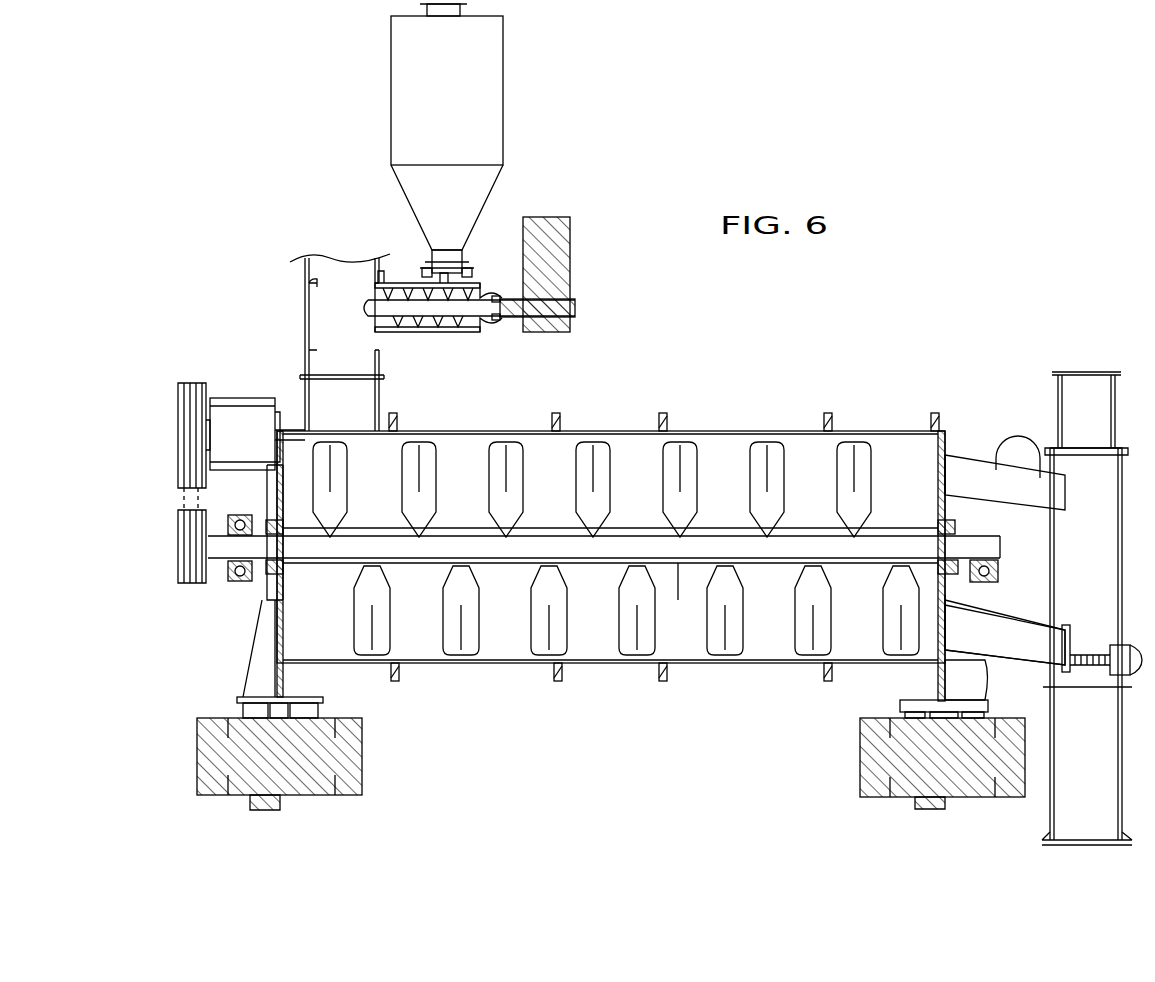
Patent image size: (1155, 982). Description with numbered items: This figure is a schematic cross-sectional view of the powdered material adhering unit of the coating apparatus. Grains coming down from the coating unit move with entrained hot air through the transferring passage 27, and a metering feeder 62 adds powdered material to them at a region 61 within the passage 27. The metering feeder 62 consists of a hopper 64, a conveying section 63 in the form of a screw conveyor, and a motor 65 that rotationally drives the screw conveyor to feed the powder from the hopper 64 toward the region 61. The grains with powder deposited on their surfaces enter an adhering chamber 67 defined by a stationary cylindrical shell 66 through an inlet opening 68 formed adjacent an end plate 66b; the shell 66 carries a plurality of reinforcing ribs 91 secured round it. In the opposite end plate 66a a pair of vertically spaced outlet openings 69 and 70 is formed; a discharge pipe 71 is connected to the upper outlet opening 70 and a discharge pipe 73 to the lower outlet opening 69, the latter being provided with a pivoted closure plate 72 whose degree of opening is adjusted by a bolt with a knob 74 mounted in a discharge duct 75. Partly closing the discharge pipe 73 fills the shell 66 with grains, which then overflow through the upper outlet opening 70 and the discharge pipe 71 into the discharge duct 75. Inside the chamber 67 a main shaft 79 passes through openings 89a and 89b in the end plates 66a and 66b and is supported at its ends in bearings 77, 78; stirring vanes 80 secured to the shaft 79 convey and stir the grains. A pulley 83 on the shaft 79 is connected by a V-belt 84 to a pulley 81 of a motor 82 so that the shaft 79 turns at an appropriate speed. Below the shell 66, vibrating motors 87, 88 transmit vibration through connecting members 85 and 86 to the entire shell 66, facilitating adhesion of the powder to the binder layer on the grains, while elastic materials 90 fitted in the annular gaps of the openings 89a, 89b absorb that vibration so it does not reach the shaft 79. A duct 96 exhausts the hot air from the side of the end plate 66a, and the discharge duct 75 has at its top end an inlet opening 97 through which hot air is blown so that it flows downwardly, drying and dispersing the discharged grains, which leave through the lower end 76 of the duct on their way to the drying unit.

The transferring passage 27 is at (305, 262).
The region 61 is at (332, 318).
The metering feeder 62 is at (544, 177).
The conveying section 63 is at (457, 346).
The hopper 64 is at (503, 95).
The motor 65 is at (570, 258).
The stationary cylindrical shell 66 is at (742, 431).
The end plate 66a is at (920, 490).
The end plate 66b is at (283, 622).
The adhering chamber 67 is at (509, 633).
The inlet opening 68 is at (345, 432).
The lower outlet opening 69 is at (930, 655).
The upper outlet opening 70 is at (938, 478).
The discharge pipe 71 is at (965, 455).
The pivoted closure plate 72 is at (1068, 650).
The discharge pipe 73 is at (990, 620).
The bolt with a knob 74 is at (1095, 668).
The discharge duct 75 is at (1050, 447).
The duct outlet 76 is at (1075, 845).
The bearing 77 is at (1000, 575).
The bearing 78 is at (238, 583).
The main shaft 79 is at (678, 565).
The stirring vanes 80 is at (468, 642).
The pulley 81 is at (190, 385).
The motor 82 is at (232, 398).
The pulley 83 is at (190, 585).
The V-belt 84 is at (205, 500).
The connecting member 85 is at (975, 690).
The connecting member 86 is at (250, 690).
The vibrating motor 87 is at (860, 790).
The vibrating motor 88 is at (362, 775).
The opening 89a is at (935, 530).
The opening 89b is at (283, 572).
The elastic materials 90 is at (283, 541).
The reinforcing ribs 91 is at (397, 420).
The duct 96 is at (1018, 448).
The inlet opening 97 is at (1085, 375).